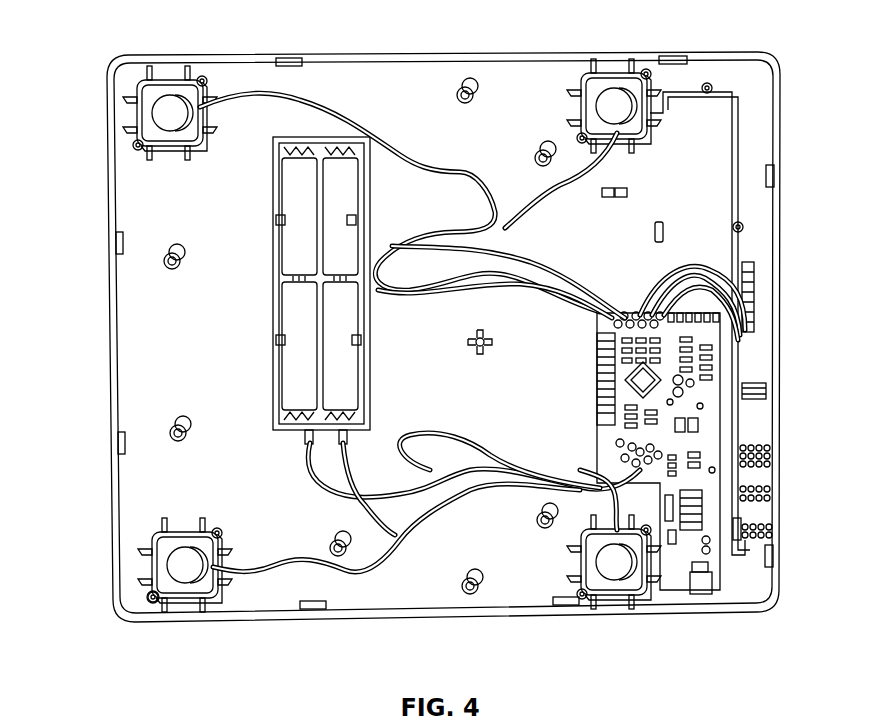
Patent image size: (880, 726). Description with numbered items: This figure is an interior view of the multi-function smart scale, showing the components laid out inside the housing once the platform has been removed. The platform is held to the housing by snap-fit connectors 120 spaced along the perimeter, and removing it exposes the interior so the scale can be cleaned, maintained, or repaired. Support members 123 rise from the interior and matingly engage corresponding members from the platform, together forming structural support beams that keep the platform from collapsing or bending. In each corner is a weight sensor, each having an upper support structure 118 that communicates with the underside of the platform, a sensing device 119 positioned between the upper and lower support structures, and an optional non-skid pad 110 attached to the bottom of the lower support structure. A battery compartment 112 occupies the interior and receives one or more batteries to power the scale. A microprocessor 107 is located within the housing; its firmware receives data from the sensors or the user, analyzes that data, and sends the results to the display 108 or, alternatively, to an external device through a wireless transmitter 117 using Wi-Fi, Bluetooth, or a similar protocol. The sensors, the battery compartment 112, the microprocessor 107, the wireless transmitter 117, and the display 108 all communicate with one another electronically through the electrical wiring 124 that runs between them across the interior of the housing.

The microprocessor 107 is at (700, 390).
The display 108 is at (742, 160).
The non-skid pad 110 is at (172, 567).
The battery compartment 112 is at (262, 243).
The wireless transmitter 117 is at (665, 552).
The upper support structure 118 is at (150, 594).
The sensing device 119 is at (150, 122).
The snap-fit connector 120 is at (115, 240).
The support member 123 is at (467, 80).
The electrical wiring 124 is at (473, 180).